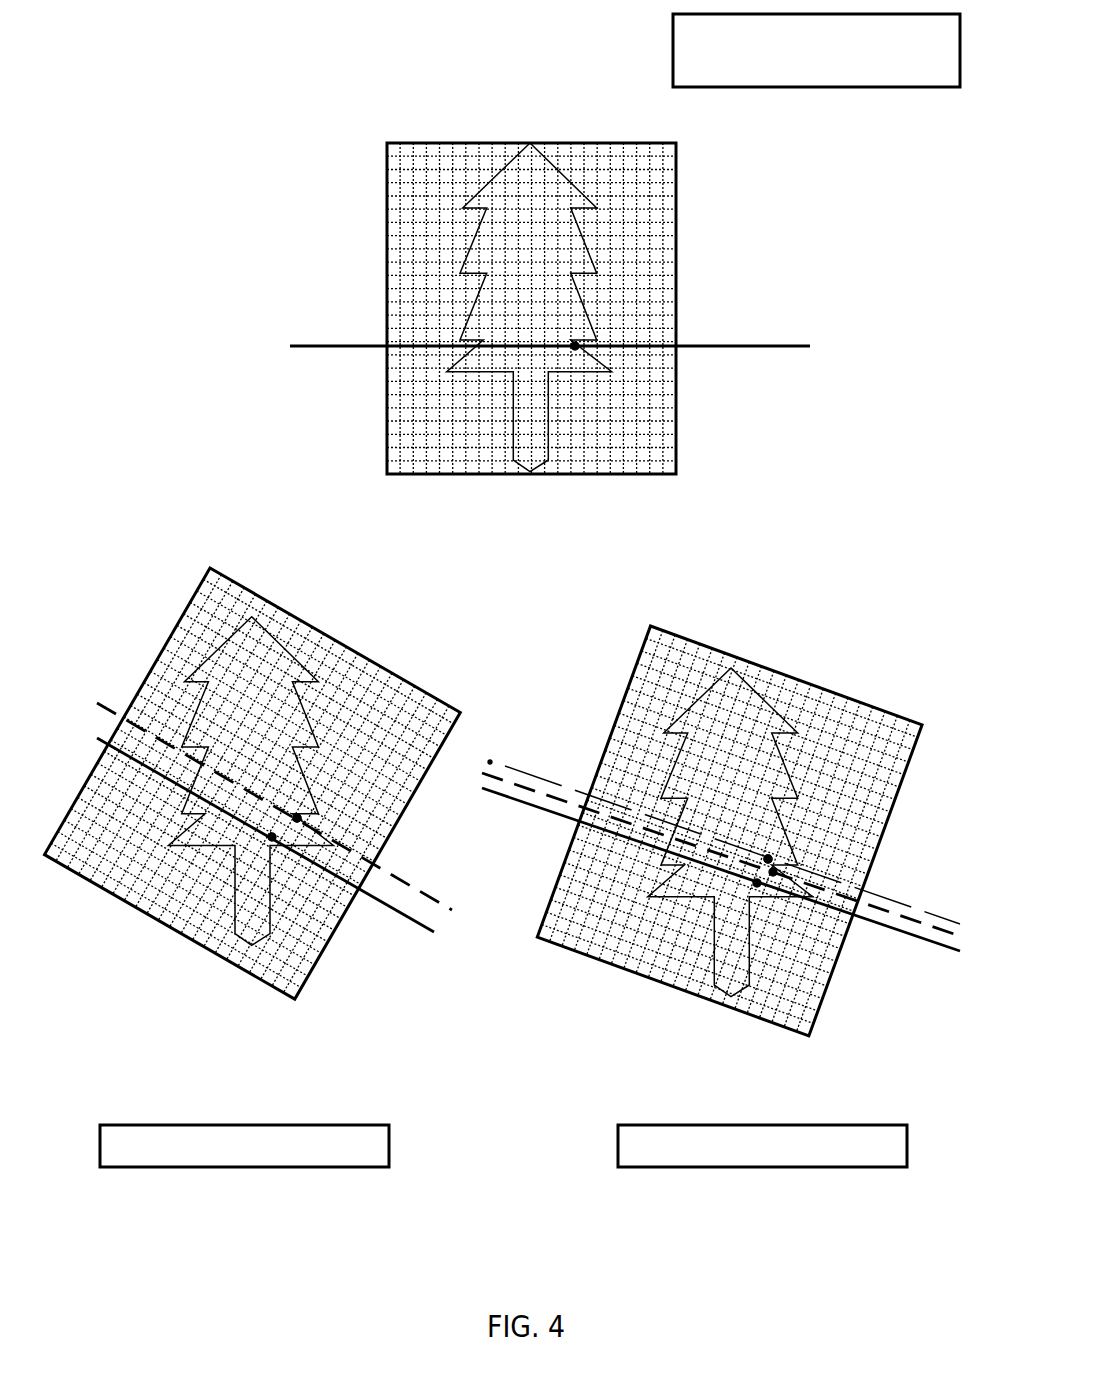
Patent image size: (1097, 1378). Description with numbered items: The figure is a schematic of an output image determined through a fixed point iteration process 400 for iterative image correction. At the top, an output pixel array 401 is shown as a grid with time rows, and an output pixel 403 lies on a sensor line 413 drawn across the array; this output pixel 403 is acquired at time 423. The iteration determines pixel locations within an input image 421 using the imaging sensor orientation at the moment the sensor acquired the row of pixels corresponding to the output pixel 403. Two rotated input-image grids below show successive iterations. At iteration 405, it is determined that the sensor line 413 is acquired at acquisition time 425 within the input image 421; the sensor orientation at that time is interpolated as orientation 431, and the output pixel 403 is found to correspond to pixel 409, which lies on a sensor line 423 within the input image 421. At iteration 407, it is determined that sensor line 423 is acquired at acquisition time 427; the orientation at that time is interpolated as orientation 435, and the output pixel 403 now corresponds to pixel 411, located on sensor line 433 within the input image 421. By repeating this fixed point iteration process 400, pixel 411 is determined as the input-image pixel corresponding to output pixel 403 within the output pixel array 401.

The fixed point iteration process 400 is at (796, 150).
The output pixel array 401 is at (627, 170).
The output pixel 403 is at (575, 346).
The iteration 405 is at (244, 1146).
The iteration 407 is at (762, 1146).
The pixel 409 is at (460, 531).
The pixel 411 is at (860, 548).
The sensor line 413 is at (713, 347).
The input image 421 is at (317, 1088).
The time / sensor line 423 is at (878, 270).
The acquisition time 425 is at (468, 559).
The acquisition time 427 is at (868, 577).
The imaging sensor orientation 431 is at (528, 587).
The sensor line 433 is at (932, 920).
The imaging sensor orientation 435 is at (768, 858).